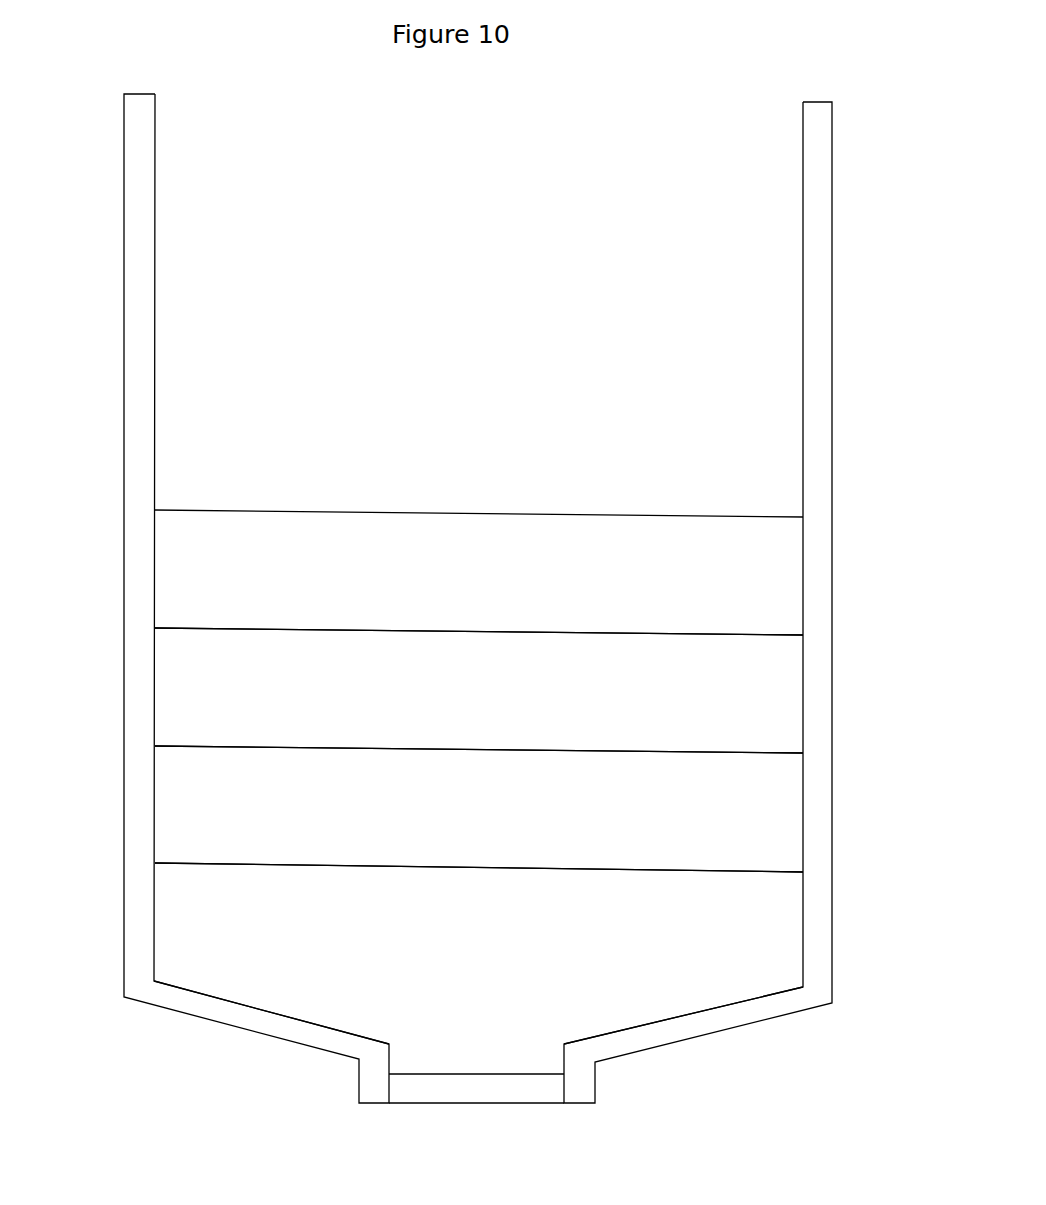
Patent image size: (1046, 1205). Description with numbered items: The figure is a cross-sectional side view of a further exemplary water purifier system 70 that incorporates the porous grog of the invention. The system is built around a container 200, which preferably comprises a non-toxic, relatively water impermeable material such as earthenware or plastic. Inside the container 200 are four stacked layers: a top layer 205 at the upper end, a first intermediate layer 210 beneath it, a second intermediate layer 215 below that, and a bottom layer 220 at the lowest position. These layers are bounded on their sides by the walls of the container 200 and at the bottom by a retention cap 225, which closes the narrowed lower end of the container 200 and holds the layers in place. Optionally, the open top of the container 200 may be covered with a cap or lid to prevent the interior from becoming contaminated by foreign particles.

The water purifier system 70 is at (99, 277).
The container 200 is at (125, 448).
The top layer 205 is at (738, 566).
The first intermediate layer 210 is at (738, 684).
The second intermediate layer 215 is at (738, 802).
The bottom layer 220 is at (738, 920).
The retention cap 225 is at (521, 1091).